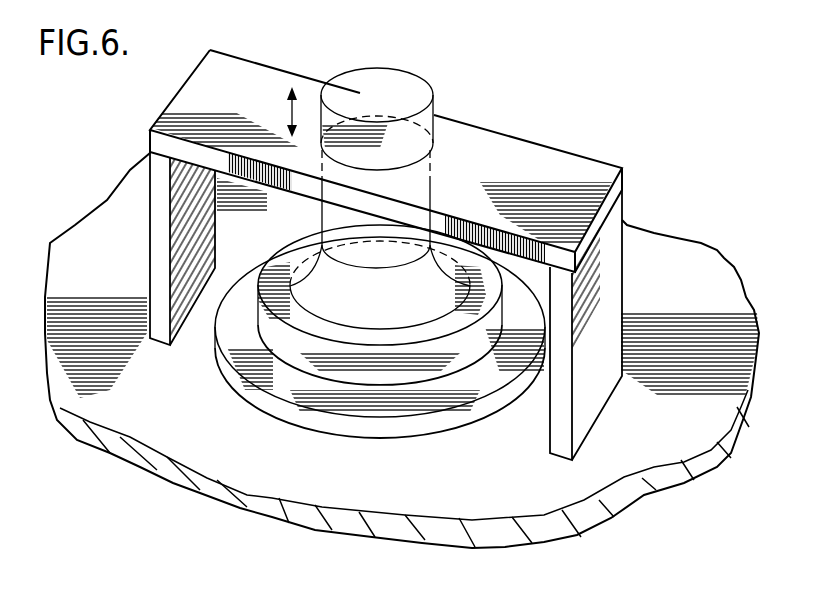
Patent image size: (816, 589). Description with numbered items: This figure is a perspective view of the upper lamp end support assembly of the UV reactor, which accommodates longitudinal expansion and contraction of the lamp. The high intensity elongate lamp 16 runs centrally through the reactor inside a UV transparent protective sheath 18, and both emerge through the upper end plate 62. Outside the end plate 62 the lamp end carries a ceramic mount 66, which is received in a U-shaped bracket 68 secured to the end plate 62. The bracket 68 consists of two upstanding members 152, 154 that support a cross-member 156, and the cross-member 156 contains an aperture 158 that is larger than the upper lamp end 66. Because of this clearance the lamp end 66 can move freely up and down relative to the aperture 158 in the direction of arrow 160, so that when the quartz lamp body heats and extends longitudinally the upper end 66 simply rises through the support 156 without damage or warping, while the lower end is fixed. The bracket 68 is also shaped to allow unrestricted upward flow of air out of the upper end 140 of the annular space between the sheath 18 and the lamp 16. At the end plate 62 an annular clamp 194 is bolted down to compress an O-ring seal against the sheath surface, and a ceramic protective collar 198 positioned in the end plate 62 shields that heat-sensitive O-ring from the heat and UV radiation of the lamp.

The elongate lamp 16 is at (327, 318).
The protective sheath 18 is at (421, 295).
The end plate 62 is at (716, 282).
The ceramic mount 66 is at (397, 137).
The U-shaped bracket 68 is at (391, 255).
The upper end of the annular space 140 is at (262, 320).
The upstanding member 152 is at (612, 252).
The upstanding member 154 is at (182, 236).
The cross-member 156 is at (520, 153).
The aperture 158 is at (429, 133).
The arrow 160 is at (284, 108).
The annular clamp 194 is at (312, 395).
The protective collar 198 is at (302, 347).